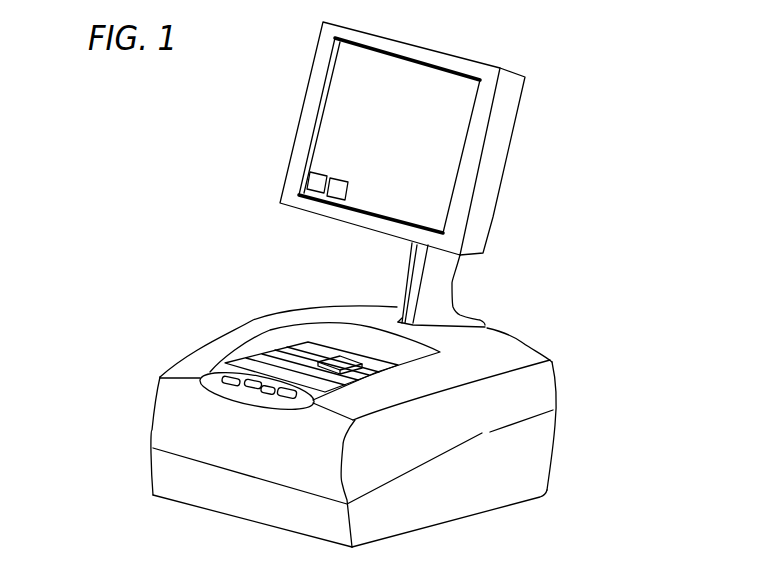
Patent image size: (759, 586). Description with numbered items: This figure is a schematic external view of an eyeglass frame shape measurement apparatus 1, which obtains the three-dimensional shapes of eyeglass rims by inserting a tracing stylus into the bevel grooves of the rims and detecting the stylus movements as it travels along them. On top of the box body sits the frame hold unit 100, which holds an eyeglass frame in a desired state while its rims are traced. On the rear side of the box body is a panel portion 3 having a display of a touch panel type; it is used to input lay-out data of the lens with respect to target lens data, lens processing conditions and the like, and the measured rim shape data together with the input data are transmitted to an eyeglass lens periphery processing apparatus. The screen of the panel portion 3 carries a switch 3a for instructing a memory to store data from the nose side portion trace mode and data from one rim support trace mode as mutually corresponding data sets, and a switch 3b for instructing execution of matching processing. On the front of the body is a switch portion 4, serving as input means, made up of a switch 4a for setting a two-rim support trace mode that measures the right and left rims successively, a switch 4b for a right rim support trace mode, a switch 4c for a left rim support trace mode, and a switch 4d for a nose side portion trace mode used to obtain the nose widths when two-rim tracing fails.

The eyeglass frame shape measurement apparatus 1 is at (226, 206).
The panel portion 3 is at (443, 138).
The switch 3a is at (317, 173).
The switch 3b is at (343, 178).
The switch portion 4 is at (184, 392).
The switch 4a is at (263, 394).
The switch 4b is at (278, 398).
The switch 4c is at (232, 386).
The switch 4d is at (252, 389).
The frame hold unit 100 is at (264, 356).